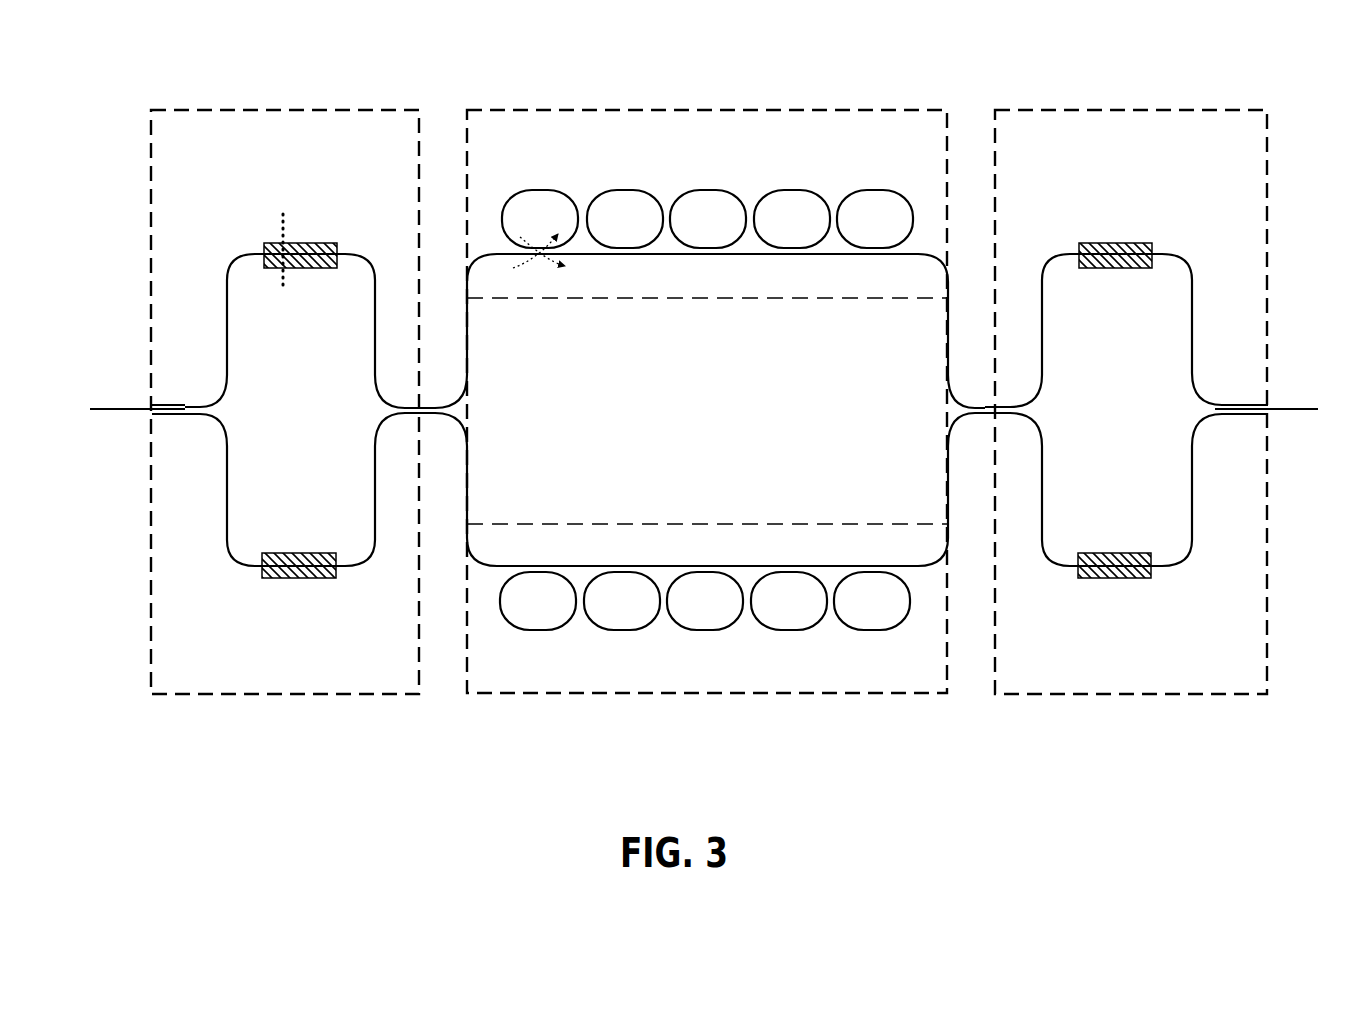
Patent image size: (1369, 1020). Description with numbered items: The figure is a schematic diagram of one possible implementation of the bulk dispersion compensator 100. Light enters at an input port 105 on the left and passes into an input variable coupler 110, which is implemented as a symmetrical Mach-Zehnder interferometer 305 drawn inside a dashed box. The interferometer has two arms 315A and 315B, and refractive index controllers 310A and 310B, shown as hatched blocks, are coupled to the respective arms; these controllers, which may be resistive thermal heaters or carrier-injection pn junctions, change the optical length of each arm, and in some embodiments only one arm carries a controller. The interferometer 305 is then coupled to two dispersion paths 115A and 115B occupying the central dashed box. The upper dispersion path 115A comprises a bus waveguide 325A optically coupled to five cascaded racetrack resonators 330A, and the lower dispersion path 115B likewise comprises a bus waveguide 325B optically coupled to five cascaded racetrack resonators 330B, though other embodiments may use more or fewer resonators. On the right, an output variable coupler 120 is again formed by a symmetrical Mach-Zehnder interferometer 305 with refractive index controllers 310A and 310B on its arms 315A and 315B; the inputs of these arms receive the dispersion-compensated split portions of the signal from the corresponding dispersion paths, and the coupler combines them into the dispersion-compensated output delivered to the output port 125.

The bulk dispersion compensator 100 is at (1181, 69).
The input port 105 is at (110, 410).
The input variable coupler 110 is at (285, 402).
The dispersion path 115A is at (706, 110).
The dispersion path 115B is at (706, 693).
The output variable coupler 120 is at (1131, 402).
The output port 125 is at (1290, 408).
The symmetrical Mach-Zehnder interferometer 305 is at (233, 594).
The refractive index controller 310A is at (315, 243).
The refractive index controller 310B is at (305, 578).
The arm 315A is at (228, 312).
The arm 315B is at (230, 505).
The bus waveguide 325A is at (665, 254).
The bus waveguide 325B is at (670, 566).
The cascaded racetrack resonators 330A is at (896, 229).
The cascaded racetrack resonators 330B is at (893, 611).